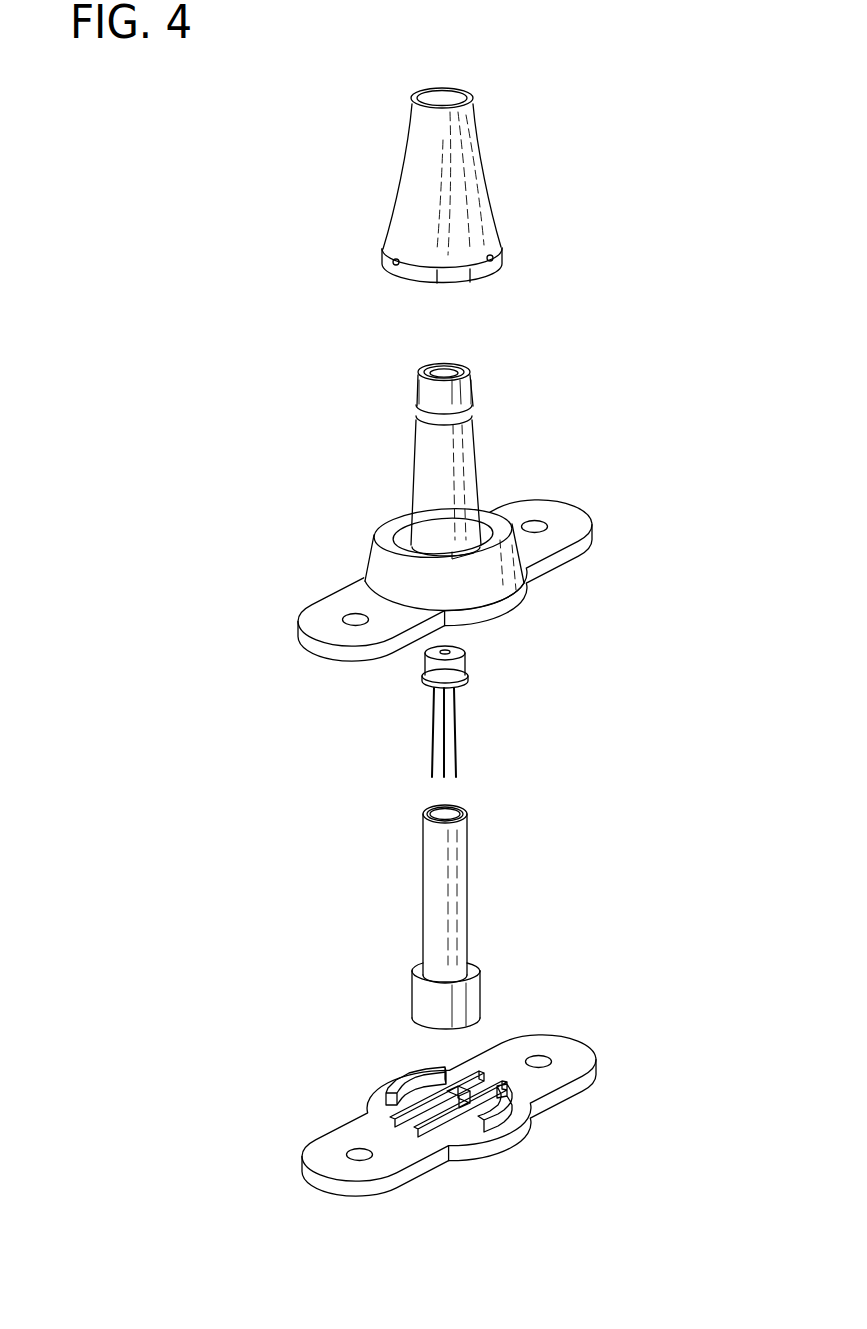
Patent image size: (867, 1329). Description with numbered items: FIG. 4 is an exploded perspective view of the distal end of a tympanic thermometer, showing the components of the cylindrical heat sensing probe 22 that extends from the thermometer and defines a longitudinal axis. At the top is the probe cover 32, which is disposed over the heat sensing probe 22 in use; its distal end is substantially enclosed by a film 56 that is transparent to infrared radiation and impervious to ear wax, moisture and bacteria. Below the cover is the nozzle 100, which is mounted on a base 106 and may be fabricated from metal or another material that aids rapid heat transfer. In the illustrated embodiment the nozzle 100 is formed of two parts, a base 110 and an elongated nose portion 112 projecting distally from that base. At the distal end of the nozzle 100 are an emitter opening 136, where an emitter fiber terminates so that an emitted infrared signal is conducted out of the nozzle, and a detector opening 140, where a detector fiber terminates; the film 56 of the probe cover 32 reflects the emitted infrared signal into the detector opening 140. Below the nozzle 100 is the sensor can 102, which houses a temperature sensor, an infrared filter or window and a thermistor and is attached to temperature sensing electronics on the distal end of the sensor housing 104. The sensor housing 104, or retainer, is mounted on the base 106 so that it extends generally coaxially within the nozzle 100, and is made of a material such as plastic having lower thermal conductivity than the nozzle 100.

The heat sensing probe 22 is at (213, 508).
The probe cover 32 is at (427, 183).
The film 56 is at (447, 94).
The nozzle 100 is at (405, 476).
The sensor can 102 is at (473, 660).
The sensor housing 104 is at (465, 935).
The base 106 is at (580, 1045).
The base 110 is at (300, 633).
The elongated nose portion 112 is at (475, 392).
The emitter opening 136 is at (430, 362).
The detector opening 140 is at (457, 362).